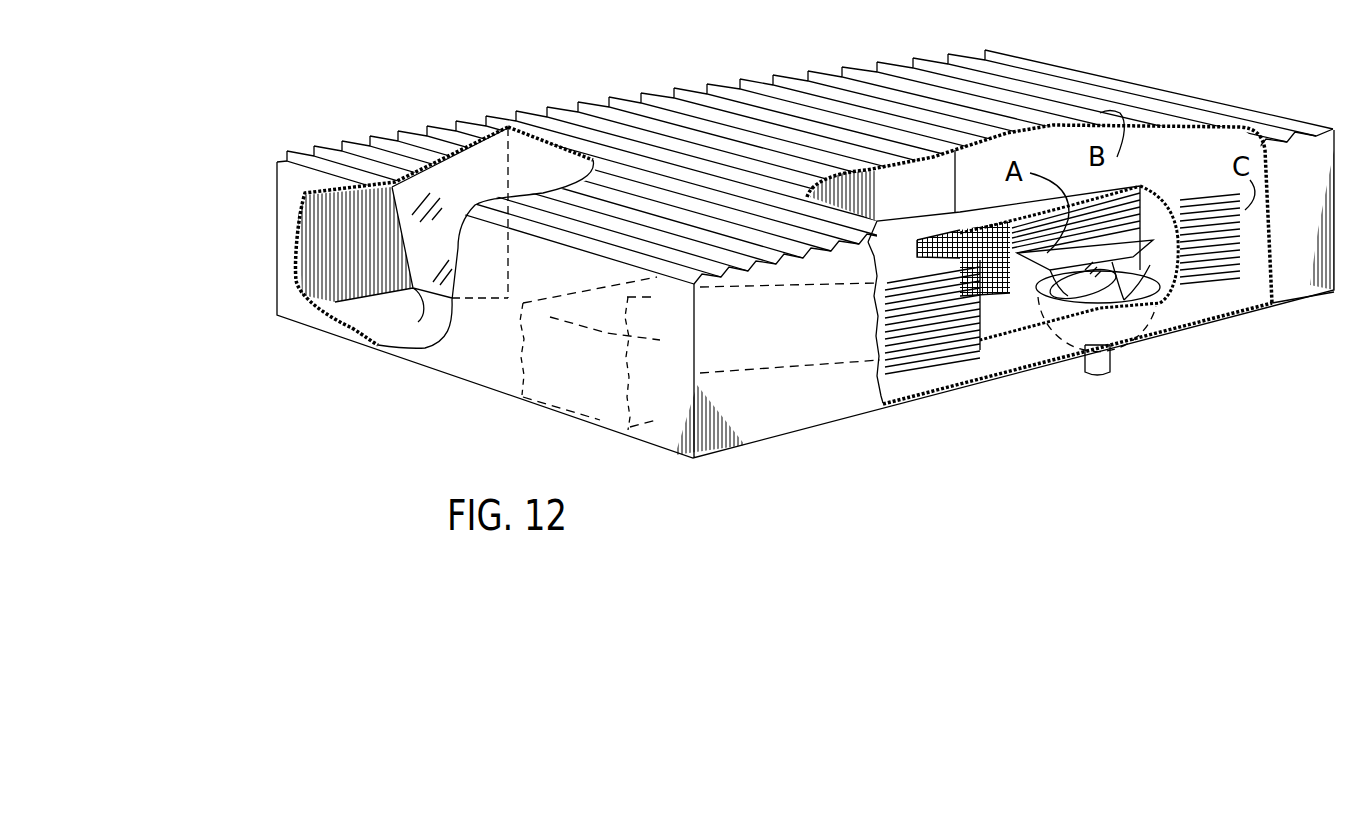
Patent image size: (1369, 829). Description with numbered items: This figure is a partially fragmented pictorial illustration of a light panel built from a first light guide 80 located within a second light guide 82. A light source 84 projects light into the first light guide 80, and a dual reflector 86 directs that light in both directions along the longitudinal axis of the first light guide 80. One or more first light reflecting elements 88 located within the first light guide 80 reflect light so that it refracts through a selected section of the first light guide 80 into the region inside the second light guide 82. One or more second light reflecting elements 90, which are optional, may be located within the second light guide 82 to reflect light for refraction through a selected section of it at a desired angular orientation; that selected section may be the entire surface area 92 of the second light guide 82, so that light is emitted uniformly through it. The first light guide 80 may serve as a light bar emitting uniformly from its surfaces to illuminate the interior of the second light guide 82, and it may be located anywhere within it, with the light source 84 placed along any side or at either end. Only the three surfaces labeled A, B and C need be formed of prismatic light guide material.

The first light guide 80 is at (946, 343).
The second light guide 82 is at (683, 96).
The light source 84 is at (1130, 328).
The dual reflector 86 is at (1050, 253).
The first light reflecting element 88 is at (720, 341).
The second light reflecting element 90 is at (418, 322).
The entire surface area 92 is at (1038, 97).